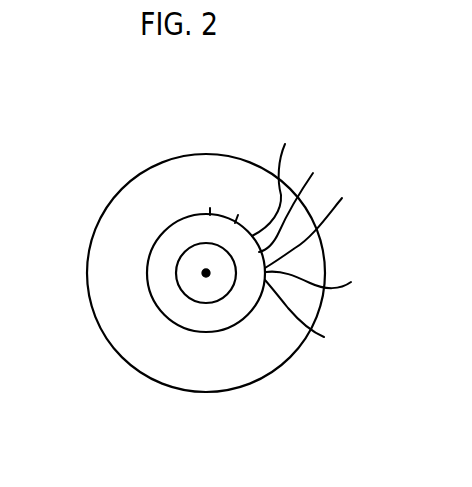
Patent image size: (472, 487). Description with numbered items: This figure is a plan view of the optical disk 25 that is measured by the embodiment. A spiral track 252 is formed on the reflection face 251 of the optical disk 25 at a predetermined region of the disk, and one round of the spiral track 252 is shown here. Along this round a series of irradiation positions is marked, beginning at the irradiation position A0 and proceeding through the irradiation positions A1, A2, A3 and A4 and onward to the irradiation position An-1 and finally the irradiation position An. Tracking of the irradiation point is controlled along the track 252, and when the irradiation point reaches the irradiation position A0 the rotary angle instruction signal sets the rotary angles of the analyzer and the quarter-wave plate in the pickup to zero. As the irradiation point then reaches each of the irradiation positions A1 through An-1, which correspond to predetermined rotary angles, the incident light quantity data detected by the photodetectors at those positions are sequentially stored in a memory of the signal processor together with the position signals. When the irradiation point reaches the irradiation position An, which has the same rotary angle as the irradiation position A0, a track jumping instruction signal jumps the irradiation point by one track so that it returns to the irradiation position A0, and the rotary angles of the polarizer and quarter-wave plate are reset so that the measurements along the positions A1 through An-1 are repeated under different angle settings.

The optical disk 25 is at (212, 132).
The reflection face 251 is at (130, 212).
The spiral track 252 is at (167, 322).
The irradiation position A0 is at (314, 222).
The irradiation position A1 is at (300, 200).
The irradiation position A2 is at (278, 177).
The irradiation position A3 is at (249, 212).
The irradiation position A4 is at (215, 196).
The irradiation position An is at (319, 273).
The irradiation position An-1 is at (314, 316).